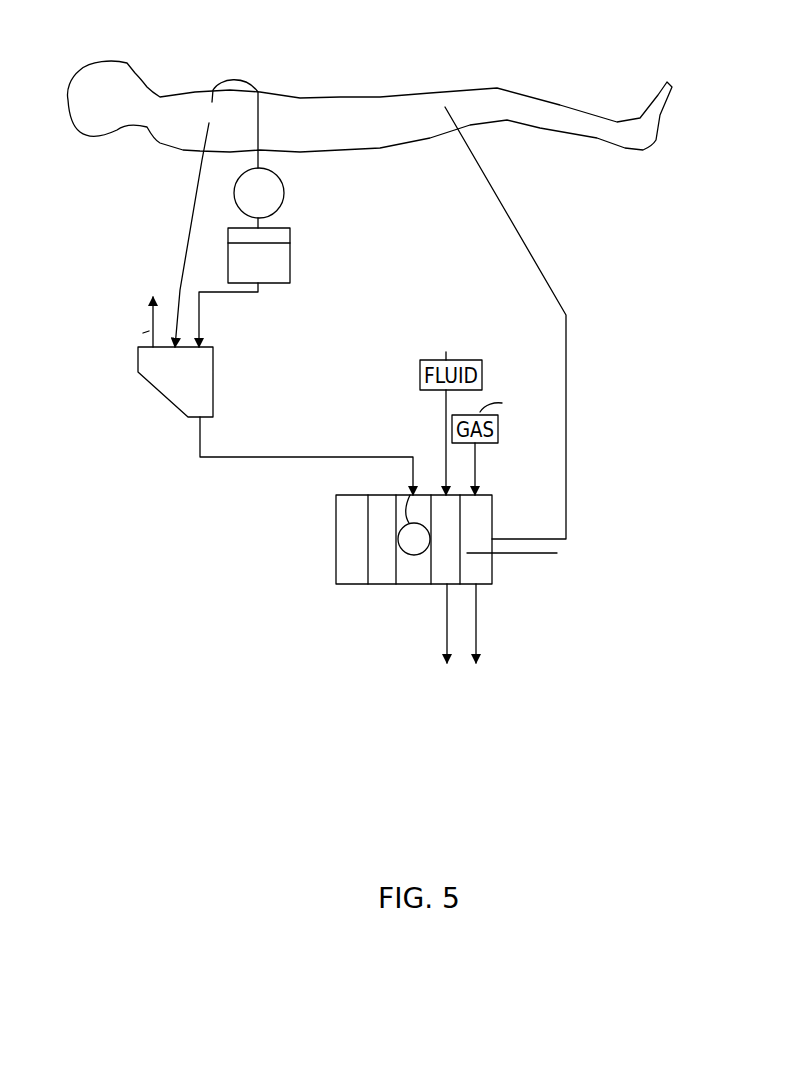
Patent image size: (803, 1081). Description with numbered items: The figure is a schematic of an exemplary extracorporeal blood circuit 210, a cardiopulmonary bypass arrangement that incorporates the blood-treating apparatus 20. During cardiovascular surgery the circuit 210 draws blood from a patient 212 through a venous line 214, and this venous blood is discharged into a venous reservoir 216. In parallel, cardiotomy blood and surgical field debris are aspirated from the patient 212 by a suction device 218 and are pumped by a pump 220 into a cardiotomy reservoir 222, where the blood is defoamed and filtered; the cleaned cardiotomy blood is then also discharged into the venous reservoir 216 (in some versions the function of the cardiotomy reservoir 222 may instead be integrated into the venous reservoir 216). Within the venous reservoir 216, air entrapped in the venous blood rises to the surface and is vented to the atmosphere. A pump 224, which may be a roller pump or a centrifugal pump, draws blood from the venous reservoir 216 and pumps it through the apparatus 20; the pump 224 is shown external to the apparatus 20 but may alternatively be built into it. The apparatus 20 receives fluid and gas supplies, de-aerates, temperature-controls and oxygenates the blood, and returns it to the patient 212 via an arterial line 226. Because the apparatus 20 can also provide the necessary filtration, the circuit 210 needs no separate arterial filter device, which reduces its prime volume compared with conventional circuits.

The apparatus 20 is at (495, 593).
The extracorporeal blood circuit 210 is at (566, 267).
The patient 212 is at (360, 98).
The venous line 214 is at (183, 223).
The venous reservoir 216 is at (167, 393).
The suction device 218 is at (227, 77).
The pump 220 is at (277, 202).
The cardiotomy reservoir 222 is at (283, 258).
The pump 224 is at (408, 488).
The arterial line 226 is at (507, 212).